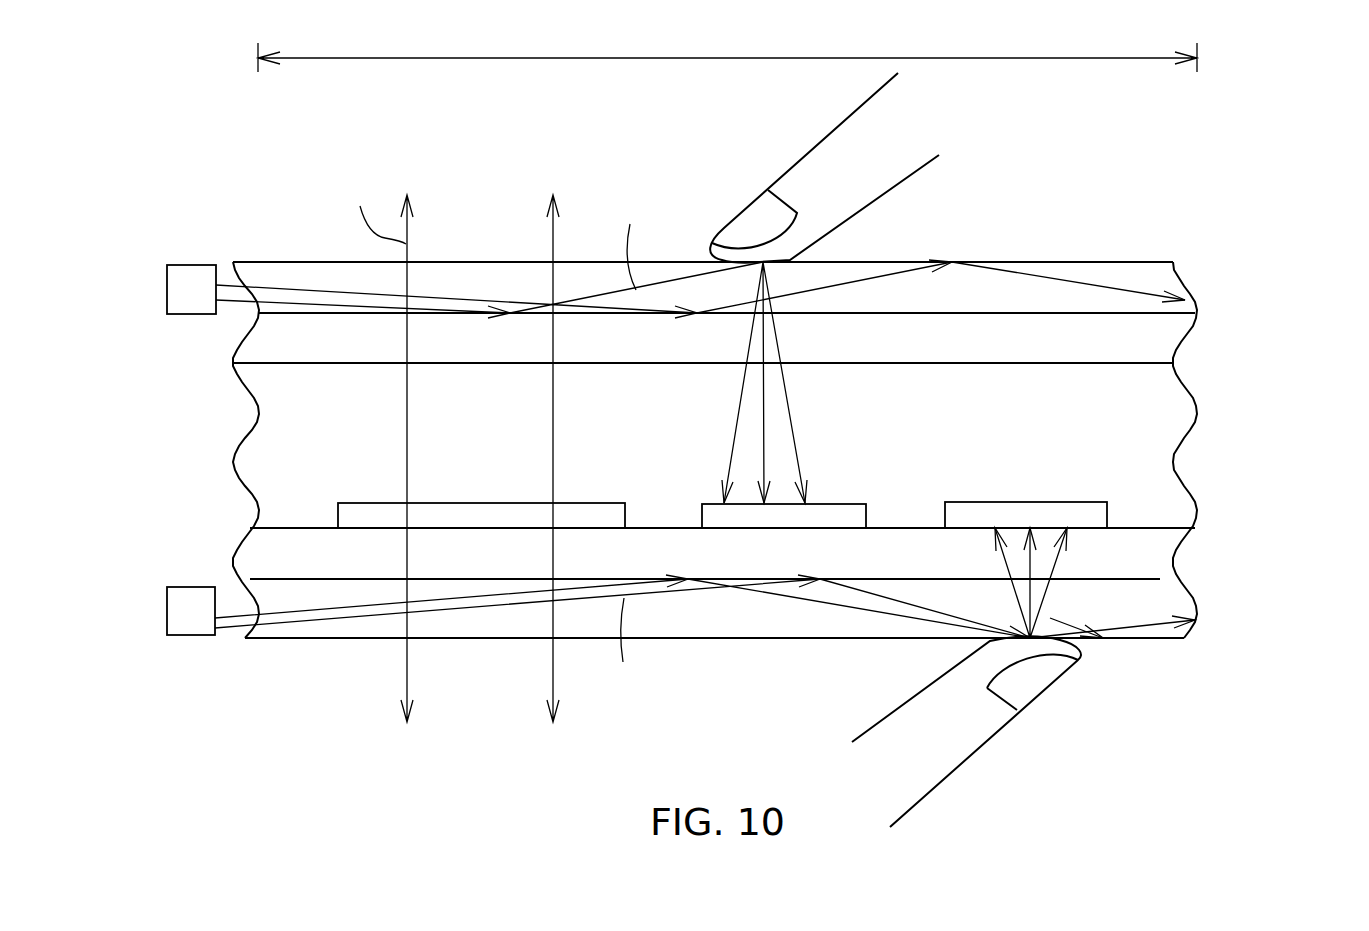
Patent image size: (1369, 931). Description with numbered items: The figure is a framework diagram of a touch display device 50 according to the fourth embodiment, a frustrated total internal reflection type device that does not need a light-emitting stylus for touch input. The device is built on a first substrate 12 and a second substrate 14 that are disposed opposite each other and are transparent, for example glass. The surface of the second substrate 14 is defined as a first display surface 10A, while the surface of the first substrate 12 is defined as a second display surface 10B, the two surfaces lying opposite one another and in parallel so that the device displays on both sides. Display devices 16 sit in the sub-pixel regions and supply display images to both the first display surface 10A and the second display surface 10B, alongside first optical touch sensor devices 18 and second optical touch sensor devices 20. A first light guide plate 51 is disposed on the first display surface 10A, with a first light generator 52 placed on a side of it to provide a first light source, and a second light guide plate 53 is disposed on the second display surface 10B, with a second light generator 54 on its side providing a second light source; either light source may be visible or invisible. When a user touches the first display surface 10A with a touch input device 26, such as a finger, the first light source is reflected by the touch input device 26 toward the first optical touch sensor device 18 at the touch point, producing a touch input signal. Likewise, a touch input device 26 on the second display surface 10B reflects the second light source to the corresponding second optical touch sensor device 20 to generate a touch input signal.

The first display surface 10A is at (1188, 303).
The second display surface 10B is at (1160, 584).
The first substrate 12 is at (691, 567).
The second substrate 14 is at (691, 348).
The display device 16 is at (472, 527).
The first optical touch sensor device 18 is at (752, 530).
The second optical touch sensor device 20 is at (985, 500).
The touch input device 26 is at (808, 154).
The touch display device 50 is at (1200, 205).
The first light guide plate 51 is at (260, 277).
The first light generator 52 is at (192, 262).
The second light guide plate 53 is at (298, 630).
The second light generator 54 is at (190, 585).